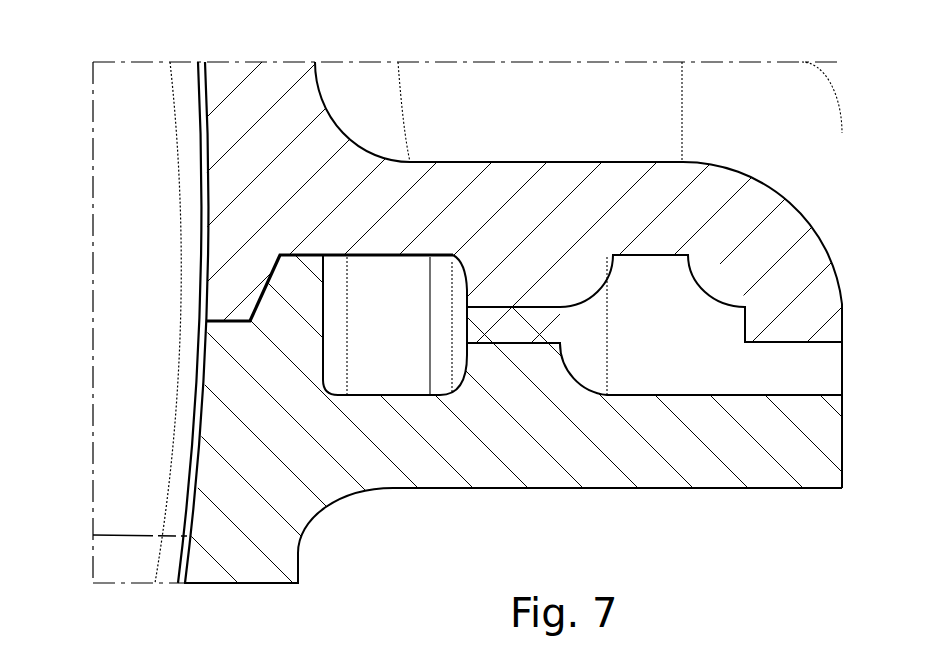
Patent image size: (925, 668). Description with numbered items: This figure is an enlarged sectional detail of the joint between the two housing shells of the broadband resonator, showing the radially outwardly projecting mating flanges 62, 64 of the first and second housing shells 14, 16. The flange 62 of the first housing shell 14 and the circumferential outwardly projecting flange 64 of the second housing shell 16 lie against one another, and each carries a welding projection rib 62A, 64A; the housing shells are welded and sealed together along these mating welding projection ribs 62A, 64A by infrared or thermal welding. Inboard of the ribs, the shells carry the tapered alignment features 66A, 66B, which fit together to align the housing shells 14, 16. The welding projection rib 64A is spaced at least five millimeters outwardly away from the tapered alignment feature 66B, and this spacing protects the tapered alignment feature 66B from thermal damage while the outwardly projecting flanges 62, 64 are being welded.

The first housing shell 14 is at (280, 80).
The second housing shell 16 is at (245, 563).
The outwardly projecting flange 62 is at (720, 165).
The welding projection rib 62A is at (537, 285).
The outwardly projecting flange 64 is at (771, 490).
The welding projection rib 64A is at (543, 367).
The tapered alignment feature 66A is at (232, 300).
The tapered alignment feature 66B is at (293, 285).